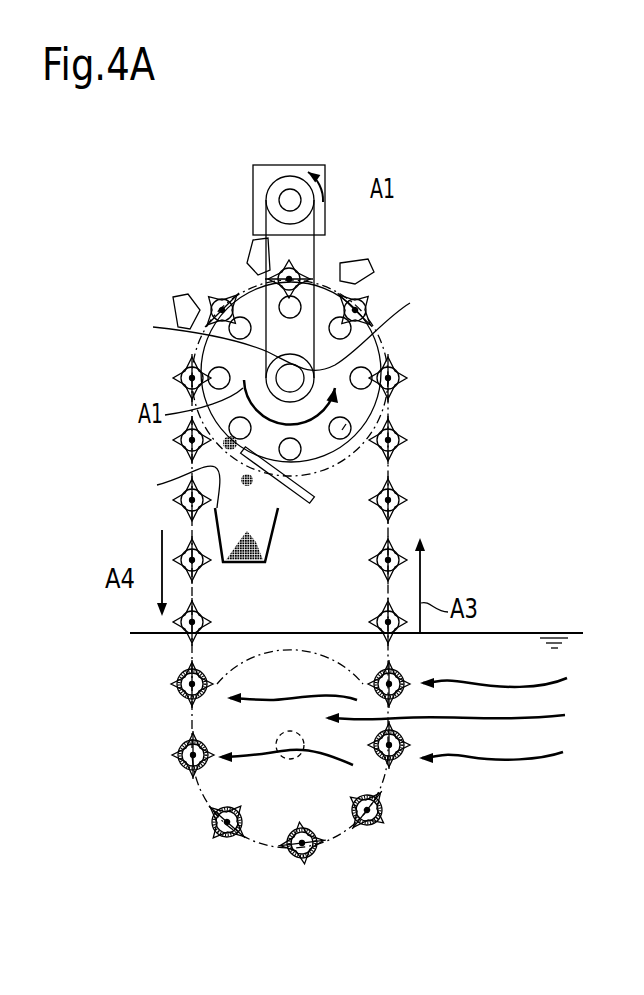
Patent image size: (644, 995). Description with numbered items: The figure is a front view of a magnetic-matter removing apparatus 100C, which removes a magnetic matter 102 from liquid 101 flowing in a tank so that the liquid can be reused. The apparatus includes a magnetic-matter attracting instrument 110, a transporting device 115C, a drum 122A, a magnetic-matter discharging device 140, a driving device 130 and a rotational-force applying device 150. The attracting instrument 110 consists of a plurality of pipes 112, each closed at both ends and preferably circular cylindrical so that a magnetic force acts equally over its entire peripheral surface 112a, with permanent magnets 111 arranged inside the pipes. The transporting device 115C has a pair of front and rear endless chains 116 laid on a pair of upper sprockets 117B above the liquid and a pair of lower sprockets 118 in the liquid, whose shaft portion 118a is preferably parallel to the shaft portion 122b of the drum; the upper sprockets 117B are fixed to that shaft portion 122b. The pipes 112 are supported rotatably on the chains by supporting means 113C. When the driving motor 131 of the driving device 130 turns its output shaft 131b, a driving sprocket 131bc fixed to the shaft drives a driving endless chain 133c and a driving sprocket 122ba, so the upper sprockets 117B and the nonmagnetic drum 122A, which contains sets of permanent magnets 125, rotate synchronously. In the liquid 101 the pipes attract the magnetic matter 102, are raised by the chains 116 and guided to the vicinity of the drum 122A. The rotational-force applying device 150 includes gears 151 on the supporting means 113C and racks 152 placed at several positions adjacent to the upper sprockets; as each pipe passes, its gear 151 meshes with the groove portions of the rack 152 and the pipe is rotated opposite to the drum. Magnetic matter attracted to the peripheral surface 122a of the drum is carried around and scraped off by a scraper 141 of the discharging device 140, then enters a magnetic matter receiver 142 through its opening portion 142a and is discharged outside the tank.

The magnetic-matter removing apparatus 100C is at (170, 172).
The magnetic-matter attracting instrument 110 is at (240, 177).
The driving device 130 is at (336, 177).
The driving motor 131 is at (327, 187).
The output shaft 131b is at (327, 212).
The driving sprocket 131bc is at (297, 176).
The transporting device 115C is at (240, 270).
The pipe 112 is at (216, 288).
The peripheral surface 112a is at (300, 282).
The supporting means 113C is at (205, 307).
The driving endless chain 133c is at (254, 336).
The shaft portion 122b is at (266, 377).
The driving sprocket 122ba is at (316, 386).
The permanent magnet 111 is at (400, 378).
The permanent magnet 125 is at (348, 424).
The upper sprocket 117B is at (347, 458).
The magnetic matter 102 is at (223, 449).
The opening portion 142a is at (159, 485).
The magnetic matter receiver 142 is at (245, 565).
The scraper 141 is at (289, 492).
The peripheral surface 122a is at (325, 468).
The drum 122A is at (330, 546).
The magnetic-matter discharging device 140 is at (325, 568).
The liquid 101 is at (527, 648).
The endless chain 116 is at (400, 660).
The lower sprocket 118 is at (242, 665).
The shaft portion 118a is at (300, 758).
The rotational-force applying device 150 is at (520, 240).
The gear 151 is at (377, 312).
The rack 152 is at (378, 276).